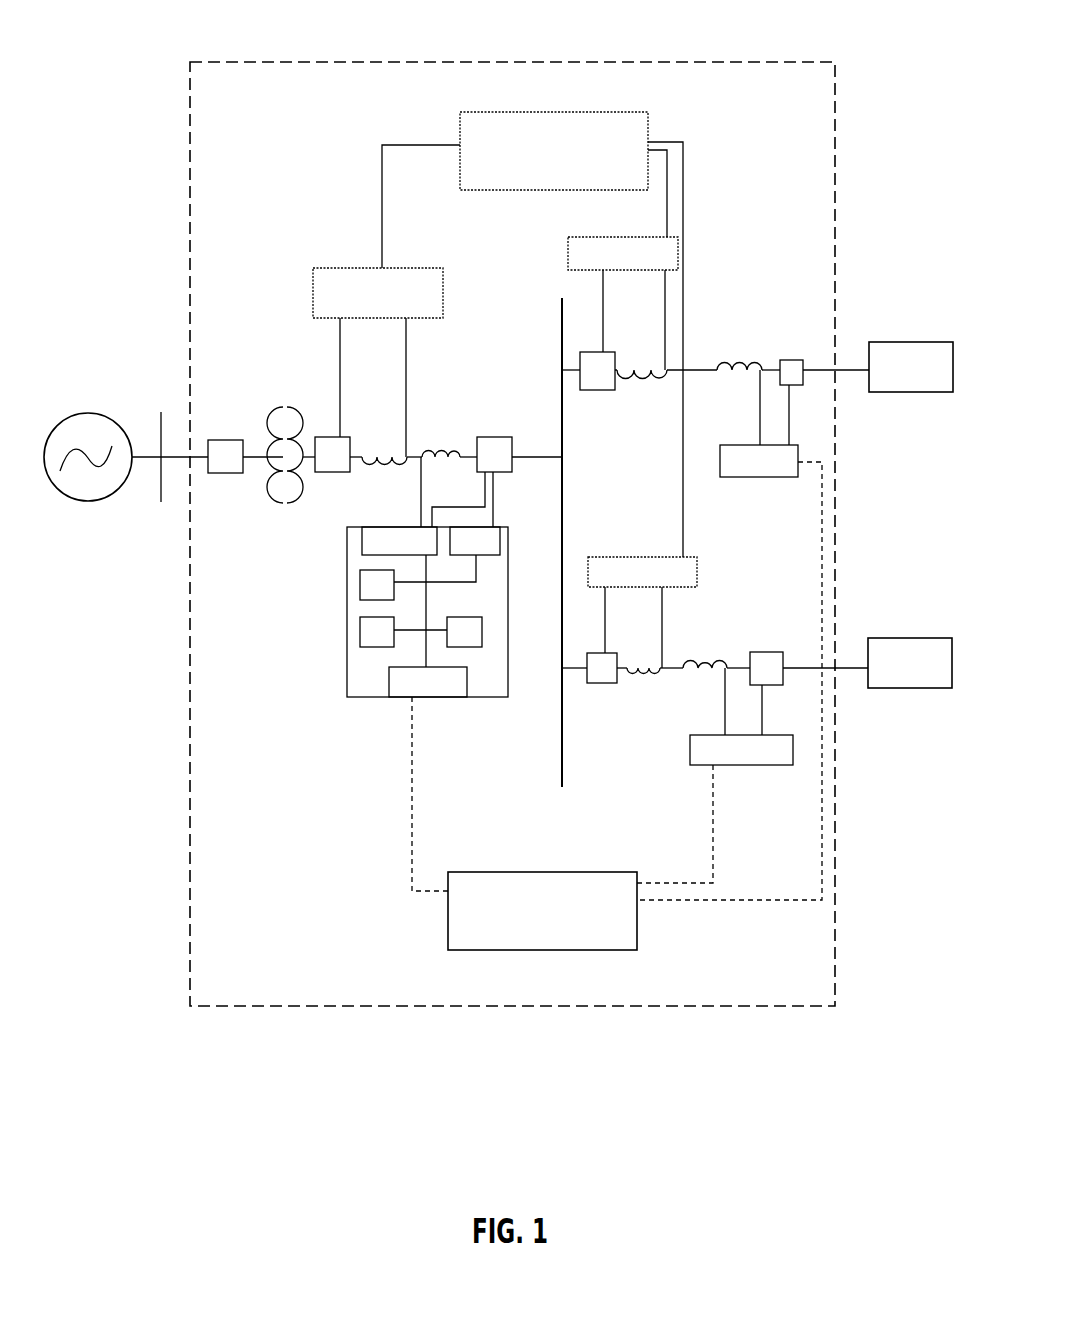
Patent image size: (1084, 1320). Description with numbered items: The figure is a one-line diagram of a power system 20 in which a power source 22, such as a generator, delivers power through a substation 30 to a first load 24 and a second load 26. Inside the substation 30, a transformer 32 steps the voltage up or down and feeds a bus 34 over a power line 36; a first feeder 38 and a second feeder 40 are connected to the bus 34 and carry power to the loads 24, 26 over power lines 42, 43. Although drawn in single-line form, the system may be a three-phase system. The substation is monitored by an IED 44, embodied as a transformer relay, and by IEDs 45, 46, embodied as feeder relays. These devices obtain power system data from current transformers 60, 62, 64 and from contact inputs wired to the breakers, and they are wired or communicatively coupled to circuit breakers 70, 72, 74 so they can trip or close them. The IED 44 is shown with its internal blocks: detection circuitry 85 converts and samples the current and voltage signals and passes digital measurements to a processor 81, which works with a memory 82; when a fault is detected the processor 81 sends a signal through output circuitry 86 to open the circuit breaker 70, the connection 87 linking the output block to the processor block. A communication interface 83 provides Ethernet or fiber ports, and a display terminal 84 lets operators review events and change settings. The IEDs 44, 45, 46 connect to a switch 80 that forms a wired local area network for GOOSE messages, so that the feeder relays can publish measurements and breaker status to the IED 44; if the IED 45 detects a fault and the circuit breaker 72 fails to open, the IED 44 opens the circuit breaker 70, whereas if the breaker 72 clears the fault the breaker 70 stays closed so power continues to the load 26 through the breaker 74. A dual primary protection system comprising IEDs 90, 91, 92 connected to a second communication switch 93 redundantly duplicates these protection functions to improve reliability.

The power system 20 is at (882, 98).
The power source 22 is at (89, 410).
The load 24 is at (895, 342).
The load 26 is at (912, 638).
The substation 30 is at (188, 768).
The transformer 32 is at (275, 407).
The bus 34 is at (560, 767).
The power line 36 is at (528, 454).
The feeder 38 is at (873, 420).
The feeder 40 is at (882, 720).
The power line 42 is at (815, 368).
The power line 43 is at (803, 666).
The IED 44 is at (427, 674).
The IED 45 is at (748, 480).
The IED 46 is at (755, 766).
The current transformer 60 is at (432, 450).
The current transformer 62 is at (737, 362).
The current transformer 64 is at (712, 660).
The circuit breaker 70 is at (490, 437).
The circuit breaker 72 is at (789, 360).
The circuit breaker 74 is at (760, 652).
The switch 80 is at (508, 872).
The processor 81 is at (360, 592).
The memory 82 is at (482, 632).
The communication interface 83 is at (455, 698).
The display terminal 84 is at (360, 640).
The detection circuitry 85 is at (371, 527).
The output circuitry 86 is at (500, 541).
The connection between output and processor 87 is at (476, 572).
The IED 90 is at (338, 268).
The IED 91 is at (594, 237).
The IED 92 is at (626, 557).
The second communication switch 93 is at (604, 112).